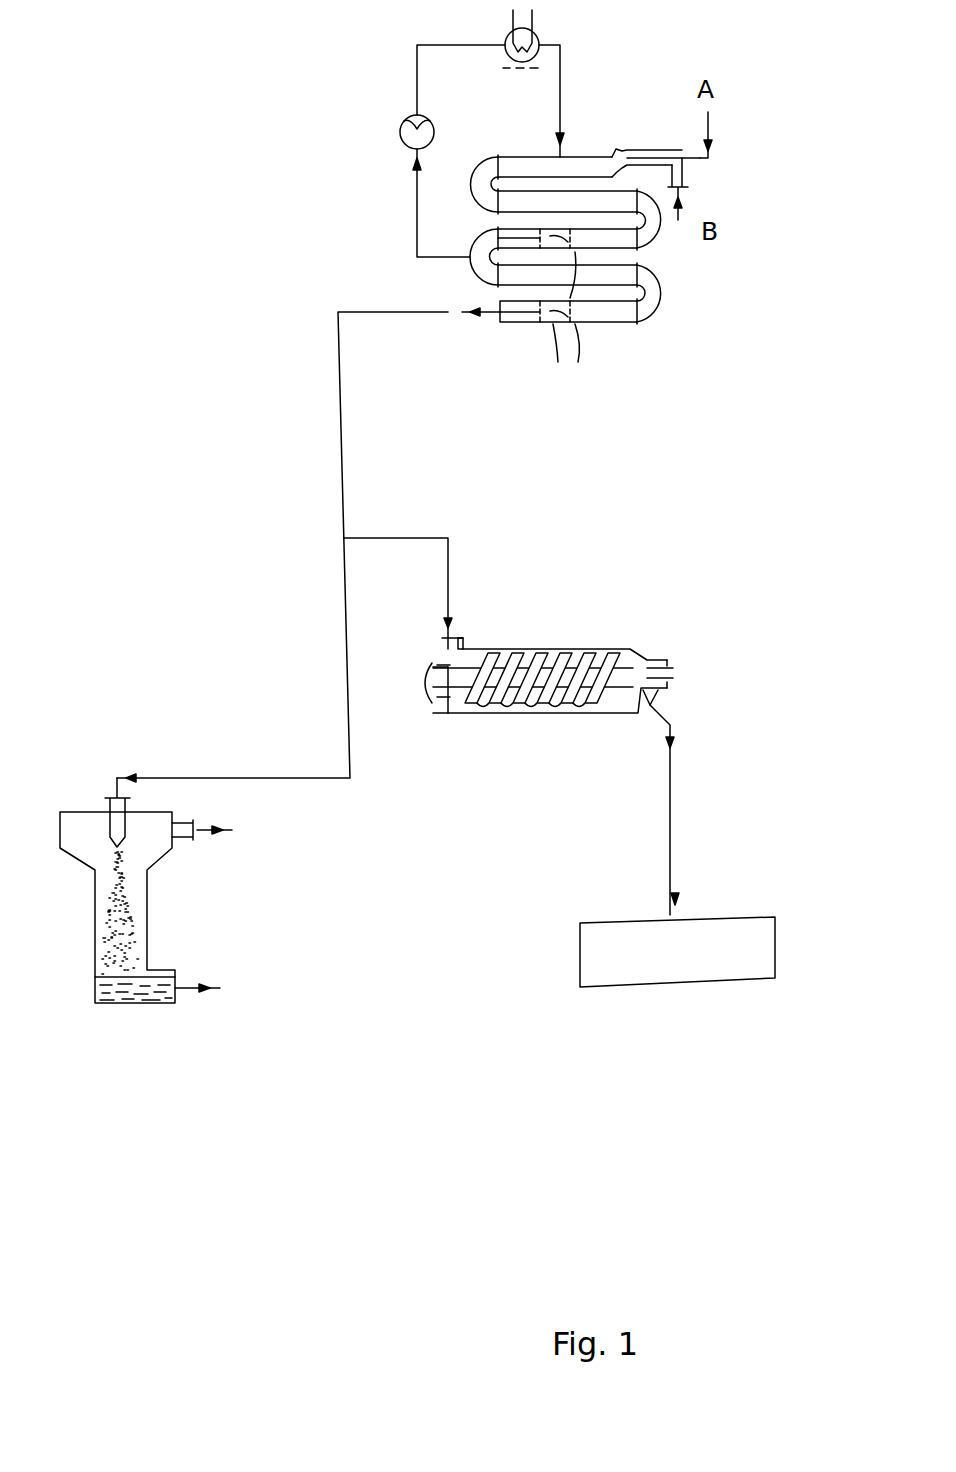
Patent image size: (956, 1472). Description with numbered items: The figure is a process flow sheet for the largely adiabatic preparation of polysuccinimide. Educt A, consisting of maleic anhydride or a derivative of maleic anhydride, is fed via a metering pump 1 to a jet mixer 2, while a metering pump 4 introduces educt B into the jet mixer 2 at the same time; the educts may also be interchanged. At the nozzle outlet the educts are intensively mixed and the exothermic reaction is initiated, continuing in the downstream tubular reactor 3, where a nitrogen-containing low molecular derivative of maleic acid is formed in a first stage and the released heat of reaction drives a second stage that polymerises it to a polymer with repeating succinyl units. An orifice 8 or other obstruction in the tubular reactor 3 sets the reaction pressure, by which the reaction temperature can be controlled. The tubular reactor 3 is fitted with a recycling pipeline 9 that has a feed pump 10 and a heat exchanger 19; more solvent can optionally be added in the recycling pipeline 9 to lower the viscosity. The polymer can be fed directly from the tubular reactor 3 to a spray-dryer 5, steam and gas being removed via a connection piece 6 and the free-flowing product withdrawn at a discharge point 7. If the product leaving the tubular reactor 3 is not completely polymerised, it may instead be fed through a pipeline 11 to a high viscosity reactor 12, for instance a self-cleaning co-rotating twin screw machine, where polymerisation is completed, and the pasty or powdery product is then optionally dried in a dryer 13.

The metering pump 1 is at (718, 135).
The jet mixer 2 is at (623, 137).
The tubular reactor 3 is at (667, 297).
The metering pump 4 is at (697, 192).
The spray-dryer 5 is at (130, 1008).
The connection piece 6 is at (219, 833).
The discharge point 7 is at (220, 991).
The orifice 8 is at (538, 311).
The recycling pipeline 9 is at (488, 133).
The feed pump 10 is at (400, 132).
The pipeline 11 is at (403, 558).
The high viscosity reactor 12 is at (582, 642).
The dryer 13 is at (688, 983).
The heat exchanger 19 is at (588, 42).